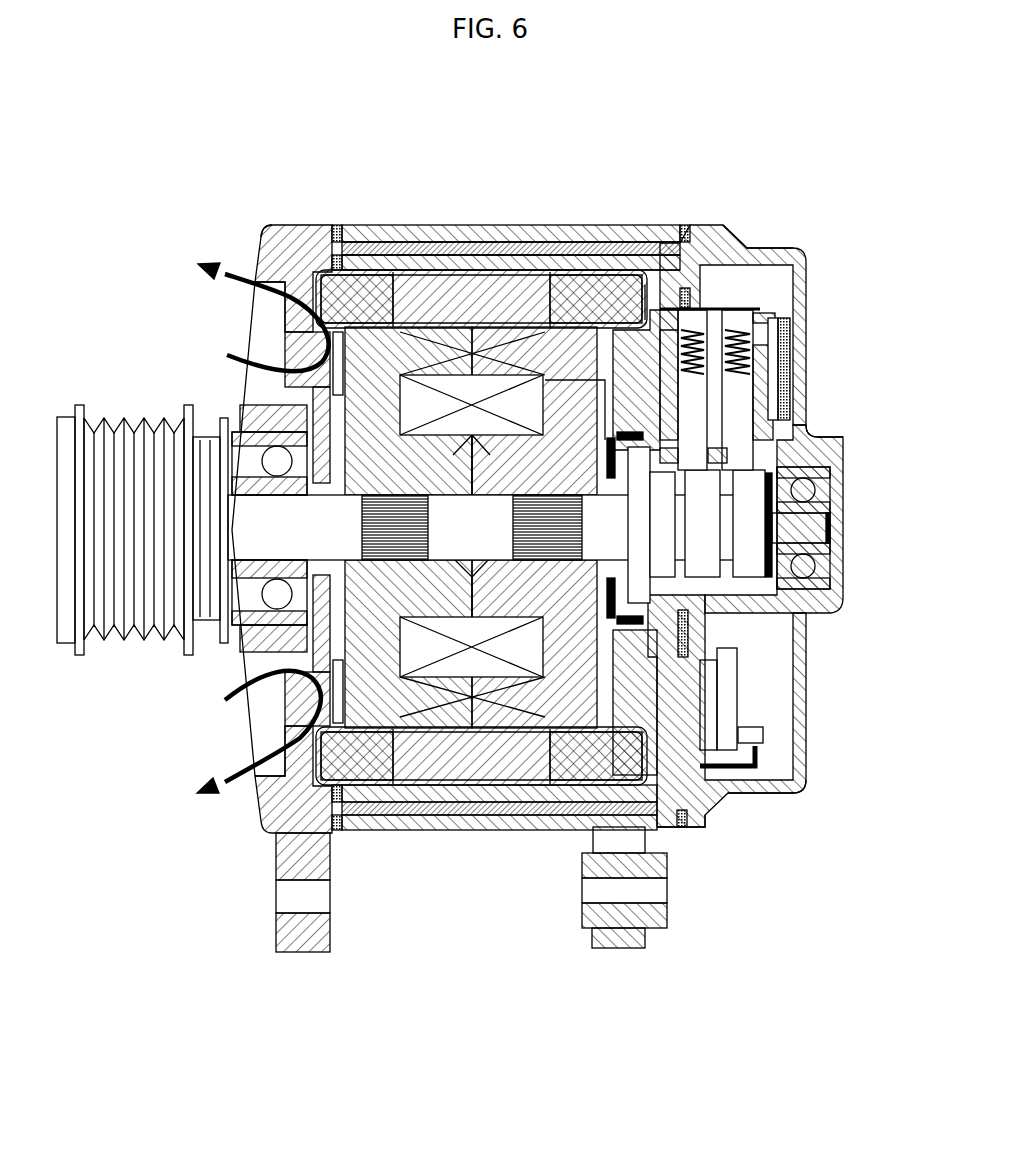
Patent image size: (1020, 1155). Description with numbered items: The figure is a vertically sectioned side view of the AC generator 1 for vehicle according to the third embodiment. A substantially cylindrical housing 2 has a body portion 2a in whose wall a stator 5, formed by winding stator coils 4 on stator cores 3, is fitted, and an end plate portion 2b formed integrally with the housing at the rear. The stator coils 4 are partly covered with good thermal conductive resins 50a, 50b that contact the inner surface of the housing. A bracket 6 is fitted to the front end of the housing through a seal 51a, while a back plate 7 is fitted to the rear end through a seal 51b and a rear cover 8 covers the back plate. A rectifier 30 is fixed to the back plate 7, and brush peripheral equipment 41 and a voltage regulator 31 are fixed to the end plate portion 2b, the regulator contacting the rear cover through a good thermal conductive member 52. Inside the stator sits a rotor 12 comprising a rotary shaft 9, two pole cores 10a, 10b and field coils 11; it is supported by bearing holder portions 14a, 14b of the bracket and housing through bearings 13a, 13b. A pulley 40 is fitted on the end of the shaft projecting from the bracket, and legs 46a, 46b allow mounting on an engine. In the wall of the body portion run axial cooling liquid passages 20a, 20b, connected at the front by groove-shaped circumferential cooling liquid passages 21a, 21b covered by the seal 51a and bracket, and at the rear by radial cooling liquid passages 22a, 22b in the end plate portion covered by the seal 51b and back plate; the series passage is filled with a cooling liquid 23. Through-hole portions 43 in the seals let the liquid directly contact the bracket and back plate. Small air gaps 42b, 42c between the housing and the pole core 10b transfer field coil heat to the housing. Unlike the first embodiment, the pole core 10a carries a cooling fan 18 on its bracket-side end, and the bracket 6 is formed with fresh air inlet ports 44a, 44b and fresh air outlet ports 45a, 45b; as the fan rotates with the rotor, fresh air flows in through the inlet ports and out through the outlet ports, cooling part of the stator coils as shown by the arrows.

The AC generator for vehicle 1 is at (470, 222).
The housing 2 is at (390, 225).
The body portion (side wall portion) 2a is at (455, 232).
The end plate portion 2b is at (637, 680).
The stator cores 3 is at (520, 262).
The stator coils 4 is at (598, 297).
The stator 5 is at (505, 297).
The bracket 6 is at (260, 240).
The back plate 7 is at (745, 255).
The rear cover 8 is at (808, 383).
The rotary shaft 9 is at (270, 542).
The pole core 10a is at (405, 712).
The pole core 10b is at (500, 693).
The field coils 11 is at (460, 663).
The rotor 12 is at (283, 640).
The bearing 13a is at (267, 432).
The bearing 13b is at (817, 493).
The bearing holder portion 14a is at (278, 420).
The bearing holder portion 14b is at (800, 453).
The cooling fan 18 is at (310, 380).
The axial cooling liquid passage 20a is at (567, 233).
The axial cooling liquid passage 20b is at (542, 832).
The circumferential cooling liquid passage 21a is at (362, 243).
The circumferential cooling liquid passage 21b is at (280, 835).
The radial cooling liquid passage 22a is at (727, 228).
The radial cooling liquid passage 22b is at (790, 797).
The cooling liquid 23 is at (425, 243).
The rectifier 30 is at (738, 678).
The voltage regulator 31 is at (773, 370).
The pulley 40 is at (128, 412).
The brush peripheral equipment 41 is at (738, 307).
The air gap 42b is at (700, 280).
The air gap 42c is at (650, 800).
The through-hole portions 43 is at (700, 792).
The fresh air inlet port 44a is at (317, 345).
The fresh air inlet port 44b is at (278, 680).
The fresh air outlet port 45a is at (205, 252).
The fresh air outlet port 45b is at (258, 798).
The leg 46a is at (310, 955).
The leg 46b is at (620, 950).
The good thermal conductive resin 50a is at (285, 240).
The good thermal conductive resin 50b is at (652, 295).
The seal 51a is at (333, 228).
The seal 51b is at (684, 226).
The good thermal conductive member 52 is at (792, 332).